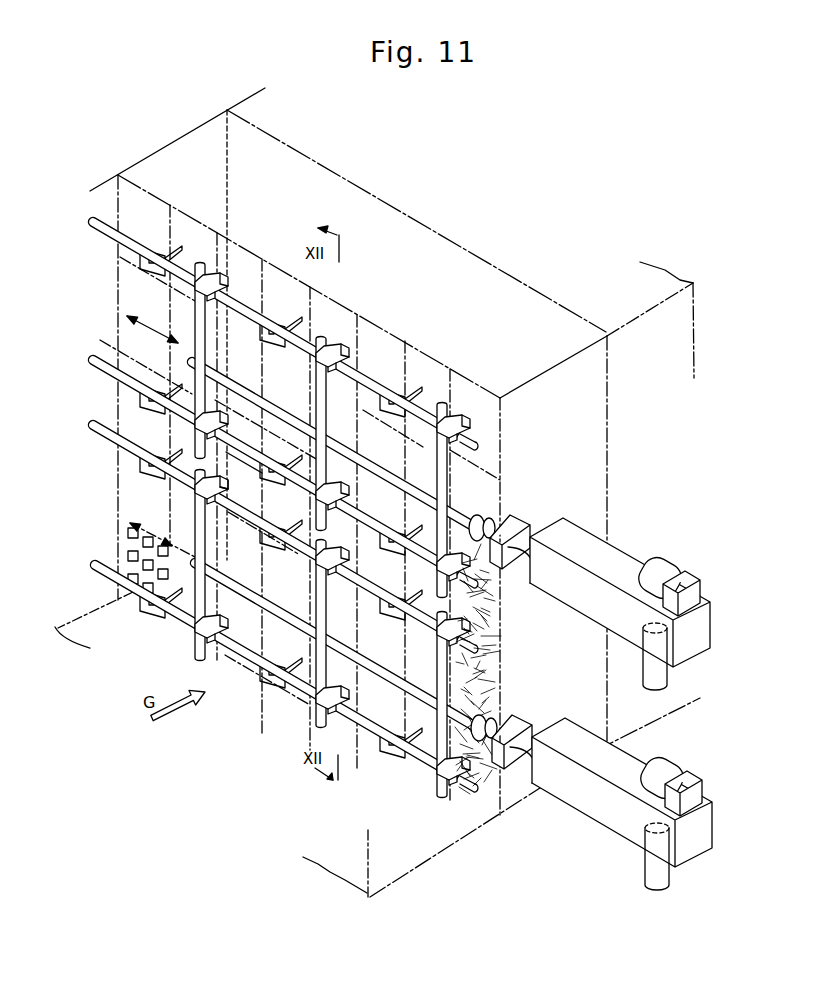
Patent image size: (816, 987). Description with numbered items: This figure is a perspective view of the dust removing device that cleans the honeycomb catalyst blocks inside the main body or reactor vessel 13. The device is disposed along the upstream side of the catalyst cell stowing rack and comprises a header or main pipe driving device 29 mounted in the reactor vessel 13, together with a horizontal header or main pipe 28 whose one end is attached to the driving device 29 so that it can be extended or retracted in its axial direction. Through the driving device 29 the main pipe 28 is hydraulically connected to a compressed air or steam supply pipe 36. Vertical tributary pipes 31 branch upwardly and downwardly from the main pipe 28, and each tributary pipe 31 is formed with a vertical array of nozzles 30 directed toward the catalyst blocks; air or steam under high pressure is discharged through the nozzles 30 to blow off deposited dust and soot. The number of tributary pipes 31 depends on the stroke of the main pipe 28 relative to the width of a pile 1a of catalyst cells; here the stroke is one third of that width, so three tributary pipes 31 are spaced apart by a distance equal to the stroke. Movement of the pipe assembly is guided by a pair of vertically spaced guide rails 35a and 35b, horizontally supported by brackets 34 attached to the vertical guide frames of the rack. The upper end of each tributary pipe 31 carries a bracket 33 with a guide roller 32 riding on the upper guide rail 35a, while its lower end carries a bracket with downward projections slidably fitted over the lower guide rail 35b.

The reactor vessel 13 is at (106, 168).
The pile of catalyst cells 1a is at (464, 279).
The header or main pipe 28 is at (276, 405).
The main pipe driving device 29 is at (617, 562).
The nozzles 30 is at (493, 640).
The vertical tributary pipe 31 is at (203, 312).
The guide roller 32 is at (230, 498).
The bracket 33 is at (340, 347).
The brackets 34 is at (397, 403).
The upper guide rail 35a is at (100, 228).
The lower guide rail 35b is at (72, 590).
The compressed air or steam supply pipe 36 is at (663, 685).